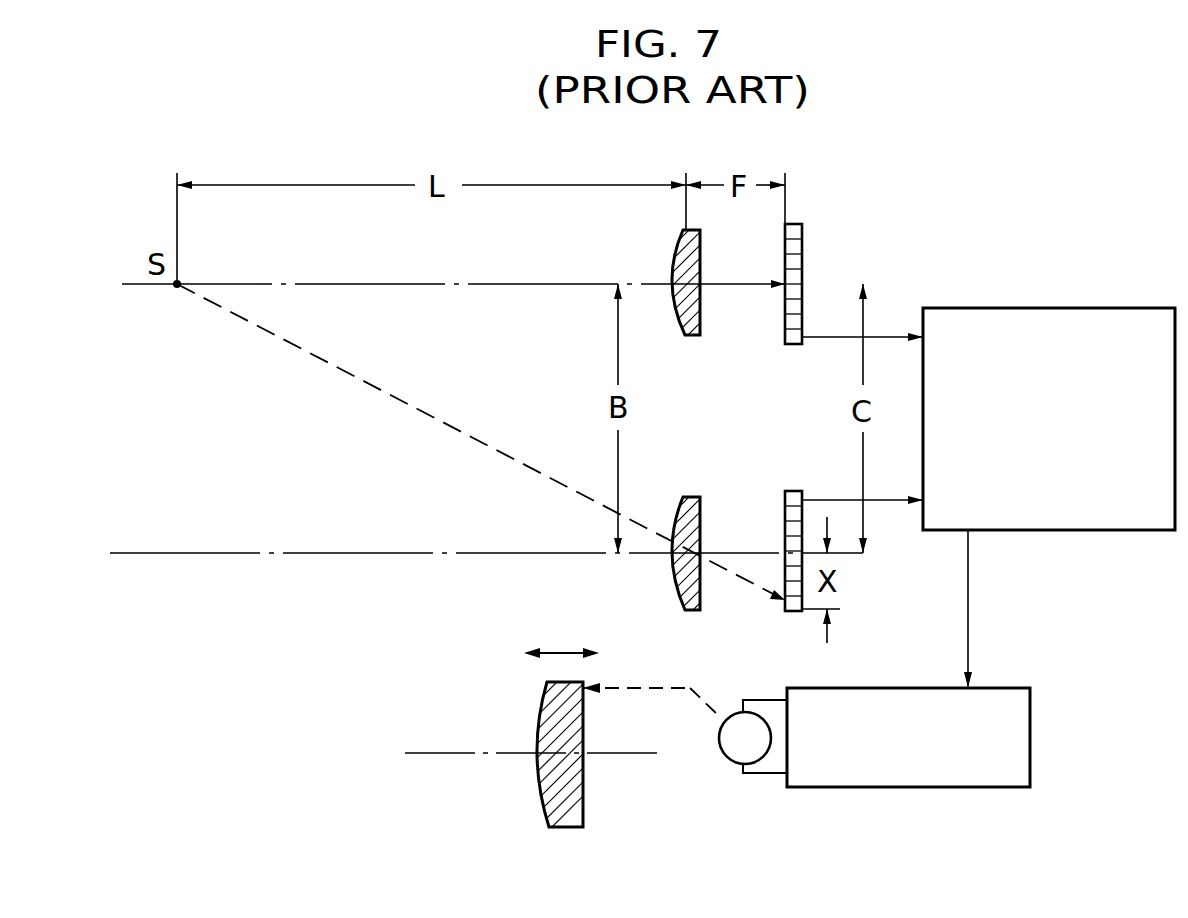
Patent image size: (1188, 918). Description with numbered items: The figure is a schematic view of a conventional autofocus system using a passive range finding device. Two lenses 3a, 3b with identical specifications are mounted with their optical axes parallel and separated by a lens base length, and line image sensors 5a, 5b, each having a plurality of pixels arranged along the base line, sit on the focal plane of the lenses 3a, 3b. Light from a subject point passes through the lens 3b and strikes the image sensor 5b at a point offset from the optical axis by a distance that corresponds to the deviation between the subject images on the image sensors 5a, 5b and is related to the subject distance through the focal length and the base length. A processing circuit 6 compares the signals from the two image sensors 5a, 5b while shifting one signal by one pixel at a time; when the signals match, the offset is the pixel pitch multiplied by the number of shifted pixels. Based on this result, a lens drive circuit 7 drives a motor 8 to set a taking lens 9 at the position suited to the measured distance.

The lens 3a is at (695, 337).
The lens 3b is at (692, 497).
The line image sensor 5a is at (797, 232).
The line image sensor 5b is at (793, 491).
The processing circuit 6 is at (1035, 308).
The lens drive circuit 7 is at (896, 688).
The motor 8 is at (734, 765).
The taking lens 9 is at (572, 804).